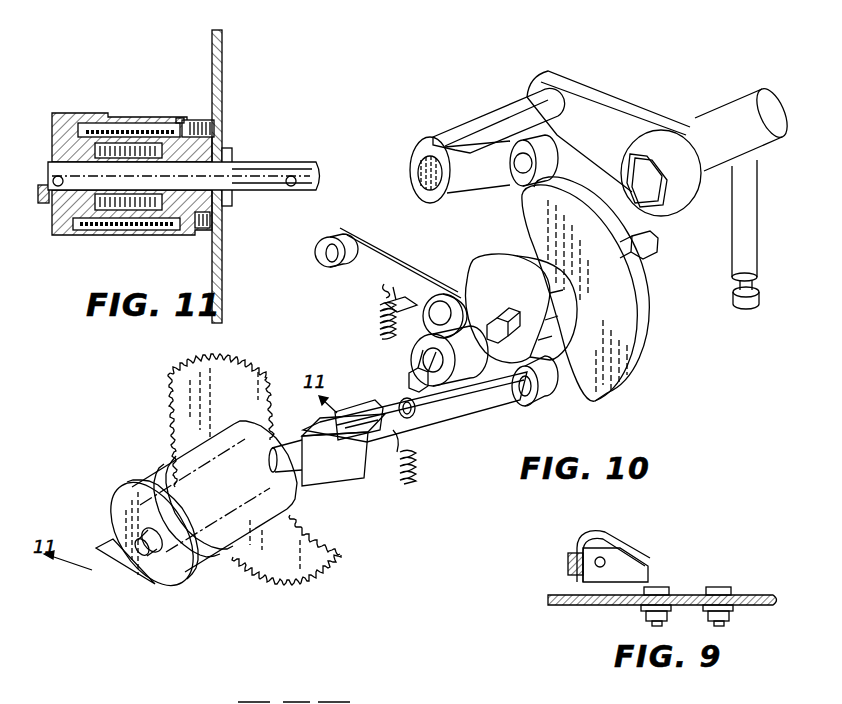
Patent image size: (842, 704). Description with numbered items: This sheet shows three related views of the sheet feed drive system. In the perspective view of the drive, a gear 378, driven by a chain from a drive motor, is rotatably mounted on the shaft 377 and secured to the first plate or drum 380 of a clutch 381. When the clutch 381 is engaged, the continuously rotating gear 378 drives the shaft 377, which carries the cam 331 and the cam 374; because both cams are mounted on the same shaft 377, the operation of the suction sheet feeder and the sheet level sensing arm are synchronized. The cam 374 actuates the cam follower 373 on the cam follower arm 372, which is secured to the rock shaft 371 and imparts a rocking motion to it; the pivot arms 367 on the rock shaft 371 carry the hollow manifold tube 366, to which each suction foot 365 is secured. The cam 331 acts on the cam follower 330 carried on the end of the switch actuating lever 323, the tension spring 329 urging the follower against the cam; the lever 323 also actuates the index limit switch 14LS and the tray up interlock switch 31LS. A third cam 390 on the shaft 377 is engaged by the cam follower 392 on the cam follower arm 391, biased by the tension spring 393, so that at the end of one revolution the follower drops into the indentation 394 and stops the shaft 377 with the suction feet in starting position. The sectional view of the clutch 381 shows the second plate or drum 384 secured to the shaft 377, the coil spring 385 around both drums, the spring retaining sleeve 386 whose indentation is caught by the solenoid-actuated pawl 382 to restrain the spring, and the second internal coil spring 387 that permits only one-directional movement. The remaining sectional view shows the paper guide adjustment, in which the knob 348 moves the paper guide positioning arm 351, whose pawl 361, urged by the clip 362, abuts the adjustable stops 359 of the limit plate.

In FIG. 11, the clutch 381 is at (95, 246).
In FIG. 10, the clutch 381 is at (126, 472).
In FIG. 11, the coil spring 385 is at (133, 148).
In FIG. 11, the first plate or drum 380 is at (192, 118).
In FIG. 10, the first plate or drum 380 is at (303, 488).
In FIG. 11, the second internal coil spring 387 is at (96, 152).
In FIG. 11, the second plate or drum 384 is at (124, 222).
In FIG. 11, the spring retaining sleeve 386 is at (70, 117).
In FIG. 11, the shaft 377 is at (272, 162).
In FIG. 10, the shaft 377 is at (654, 253).
In FIG. 10, the cam 374 is at (651, 348).
In FIG. 10, the pivot arms 367 is at (604, 108).
In FIG. 10, the hollow manifold tube 366 is at (708, 118).
In FIG. 10, the suction foot 365 is at (733, 225).
In FIG. 10, the rock shaft 371 is at (498, 110).
In FIG. 10, the cam follower arm 372 is at (426, 140).
In FIG. 10, the cam follower 373 is at (520, 182).
In FIG. 10, the cam 331 is at (490, 256).
In FIG. 10, the cam follower 392 is at (466, 282).
In FIG. 10, the cam follower arm 391 is at (358, 270).
In FIG. 10, the tension spring 393 is at (380, 326).
In FIG. 10, the indentation 394 is at (402, 334).
In FIG. 10, the third cam 390 is at (412, 369).
In FIG. 10, the cam follower 330 is at (538, 397).
In FIG. 10, the switch actuating lever 323 is at (478, 414).
In FIG. 10, the tray up interlock switch 31LS is at (347, 482).
In FIG. 10, the index limit switch 14LS is at (370, 467).
In FIG. 10, the tension spring 329 is at (417, 468).
In FIG. 10, the gear 378 is at (306, 594).
In FIG. 10, the pawl 382 is at (116, 570).
In FIG. 10, the knob 348 is at (300, 702).
In FIG. 9, the paper guide positioning arm 351 is at (582, 594).
In FIG. 9, the adjustable stops 359 is at (658, 588).
In FIG. 9, the pawl 361 is at (645, 570).
In FIG. 9, the clip 362 is at (577, 538).